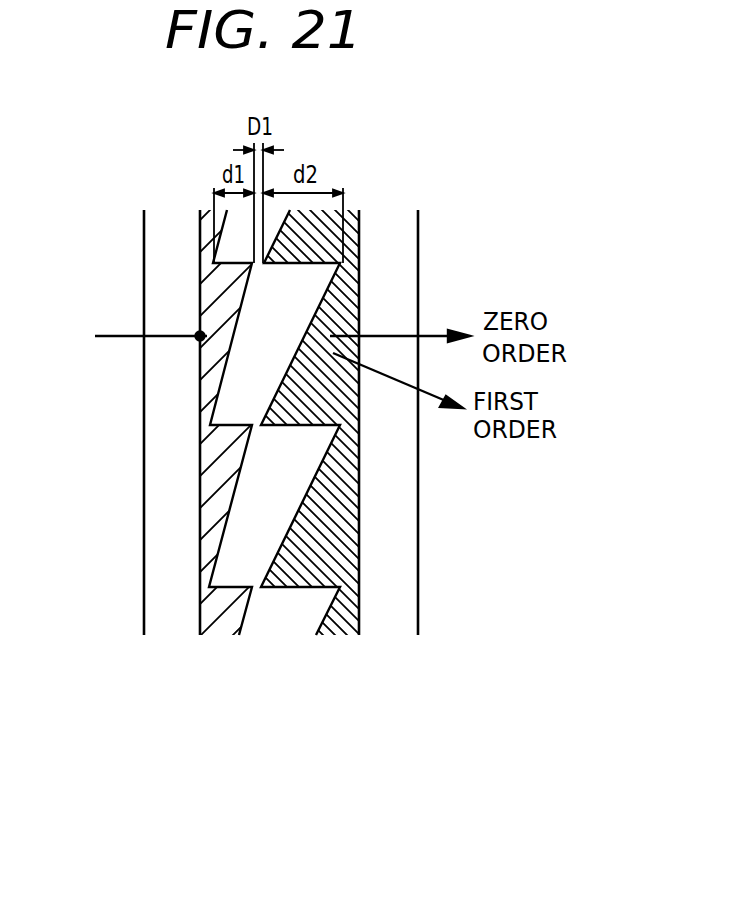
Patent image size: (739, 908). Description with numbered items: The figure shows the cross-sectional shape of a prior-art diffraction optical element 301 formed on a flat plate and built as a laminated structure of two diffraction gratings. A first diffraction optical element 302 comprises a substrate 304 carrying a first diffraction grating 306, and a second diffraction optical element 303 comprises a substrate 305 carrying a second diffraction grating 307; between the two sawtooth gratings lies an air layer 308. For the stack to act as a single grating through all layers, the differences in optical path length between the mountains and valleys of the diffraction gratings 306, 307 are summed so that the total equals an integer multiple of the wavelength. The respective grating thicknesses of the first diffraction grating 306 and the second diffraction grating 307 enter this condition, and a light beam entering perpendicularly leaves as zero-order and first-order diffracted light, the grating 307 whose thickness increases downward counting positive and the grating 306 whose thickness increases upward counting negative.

The diffraction optical element 301 is at (275, 461).
The first diffraction optical element 302 is at (195, 461).
The second diffraction optical element 303 is at (340, 436).
The substrate 304 is at (167, 620).
The substrate 305 is at (392, 620).
The first diffraction grating 306 is at (232, 620).
The second diffraction grating 307 is at (332, 620).
The air layer 308 is at (258, 505).